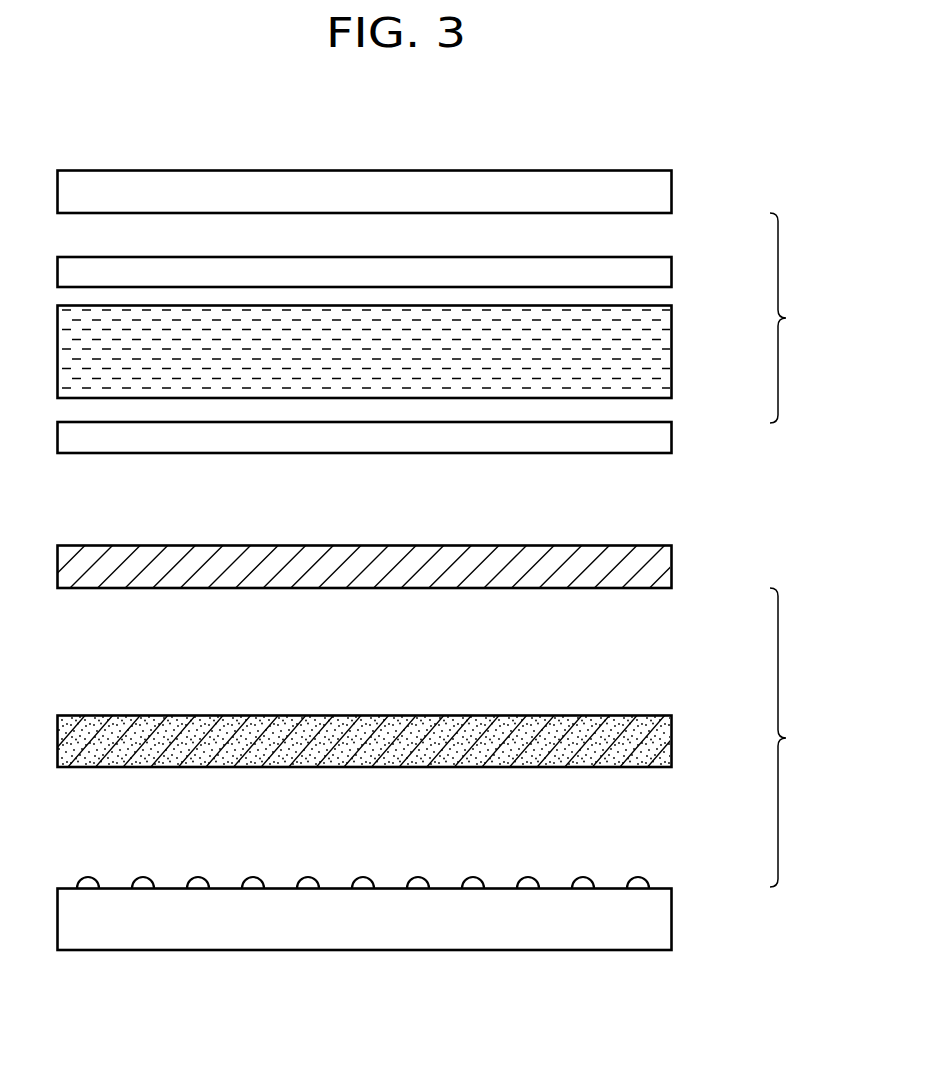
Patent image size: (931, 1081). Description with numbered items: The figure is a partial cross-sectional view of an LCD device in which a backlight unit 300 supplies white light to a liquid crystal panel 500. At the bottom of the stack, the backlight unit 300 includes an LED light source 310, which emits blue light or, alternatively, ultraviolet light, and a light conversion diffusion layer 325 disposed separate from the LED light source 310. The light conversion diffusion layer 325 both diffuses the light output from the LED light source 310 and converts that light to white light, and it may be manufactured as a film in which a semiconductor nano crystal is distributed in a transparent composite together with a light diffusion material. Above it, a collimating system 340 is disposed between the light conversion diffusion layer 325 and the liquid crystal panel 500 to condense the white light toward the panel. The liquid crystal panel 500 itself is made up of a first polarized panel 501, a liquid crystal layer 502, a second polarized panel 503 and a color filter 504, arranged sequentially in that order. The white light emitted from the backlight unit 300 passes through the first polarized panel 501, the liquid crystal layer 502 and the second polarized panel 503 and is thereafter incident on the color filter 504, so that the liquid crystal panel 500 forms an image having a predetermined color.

The color filter 504 is at (672, 192).
The second polarized panel 503 is at (672, 272).
The liquid crystal layer 502 is at (672, 351).
The first polarized panel 501 is at (672, 437).
The liquid crystal panel 500 is at (802, 318).
The collimating system 340 is at (672, 567).
The light conversion diffusion layer 325 is at (672, 740).
The LED light source 310 is at (672, 919).
The backlight unit 300 is at (802, 737).